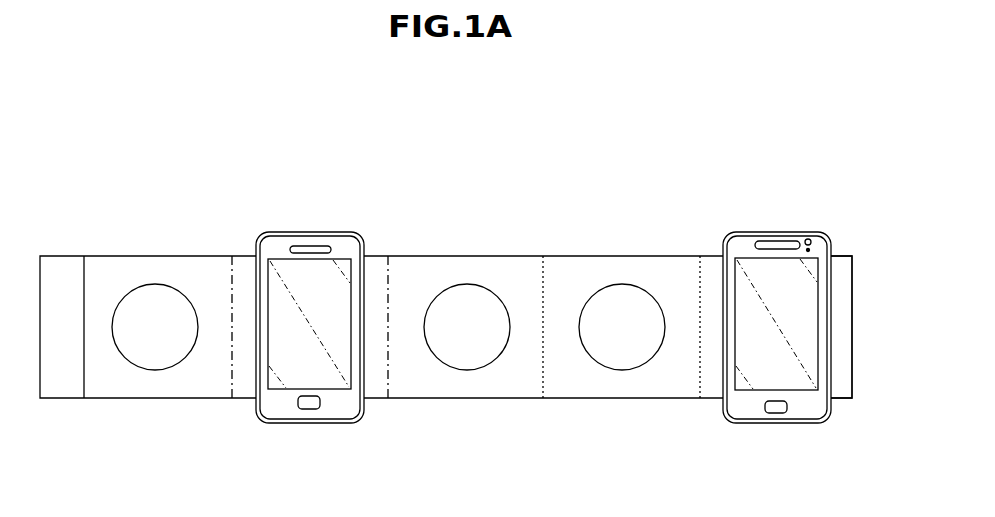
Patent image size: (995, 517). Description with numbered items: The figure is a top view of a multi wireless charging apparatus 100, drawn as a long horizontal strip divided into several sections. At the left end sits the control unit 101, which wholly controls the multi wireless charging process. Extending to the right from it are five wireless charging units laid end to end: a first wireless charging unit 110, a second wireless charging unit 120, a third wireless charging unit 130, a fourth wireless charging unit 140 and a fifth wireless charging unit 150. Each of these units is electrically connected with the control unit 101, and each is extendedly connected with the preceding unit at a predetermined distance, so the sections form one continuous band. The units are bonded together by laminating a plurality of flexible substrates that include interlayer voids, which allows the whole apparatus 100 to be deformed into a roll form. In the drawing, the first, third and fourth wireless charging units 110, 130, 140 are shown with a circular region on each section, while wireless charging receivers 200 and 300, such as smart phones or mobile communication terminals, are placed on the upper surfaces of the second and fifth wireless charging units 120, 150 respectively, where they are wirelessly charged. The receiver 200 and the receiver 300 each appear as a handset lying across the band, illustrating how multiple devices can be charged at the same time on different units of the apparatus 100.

The multi wireless charging apparatus 100 is at (730, 173).
The control unit 101 is at (60, 277).
The first wireless charging unit 110 is at (157, 270).
The second wireless charging unit 120 is at (375, 268).
The third wireless charging unit 130 is at (465, 270).
The fourth wireless charging unit 140 is at (622, 270).
The fifth wireless charging unit 150 is at (842, 262).
The wireless charging receiver 200 is at (290, 413).
The wireless charging receiver 300 is at (753, 413).